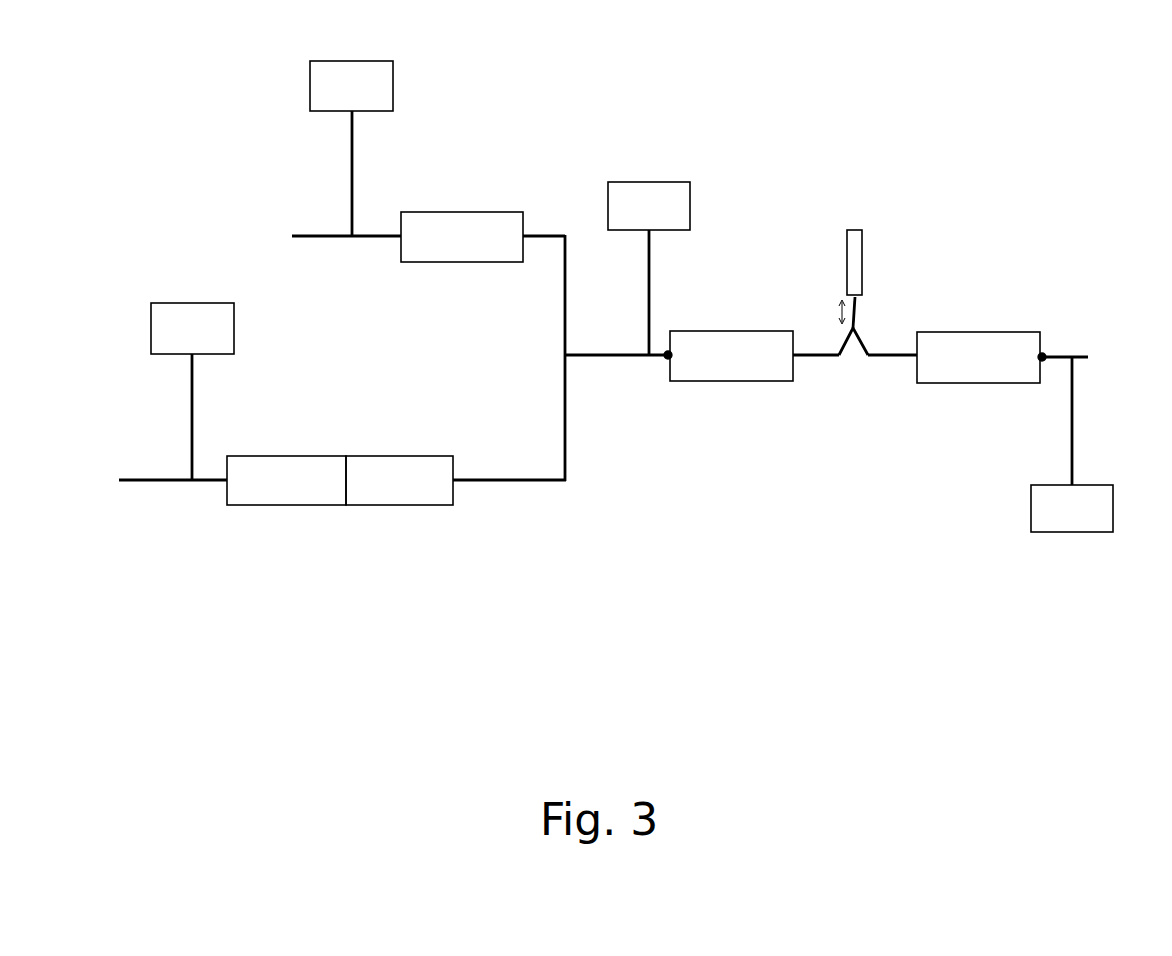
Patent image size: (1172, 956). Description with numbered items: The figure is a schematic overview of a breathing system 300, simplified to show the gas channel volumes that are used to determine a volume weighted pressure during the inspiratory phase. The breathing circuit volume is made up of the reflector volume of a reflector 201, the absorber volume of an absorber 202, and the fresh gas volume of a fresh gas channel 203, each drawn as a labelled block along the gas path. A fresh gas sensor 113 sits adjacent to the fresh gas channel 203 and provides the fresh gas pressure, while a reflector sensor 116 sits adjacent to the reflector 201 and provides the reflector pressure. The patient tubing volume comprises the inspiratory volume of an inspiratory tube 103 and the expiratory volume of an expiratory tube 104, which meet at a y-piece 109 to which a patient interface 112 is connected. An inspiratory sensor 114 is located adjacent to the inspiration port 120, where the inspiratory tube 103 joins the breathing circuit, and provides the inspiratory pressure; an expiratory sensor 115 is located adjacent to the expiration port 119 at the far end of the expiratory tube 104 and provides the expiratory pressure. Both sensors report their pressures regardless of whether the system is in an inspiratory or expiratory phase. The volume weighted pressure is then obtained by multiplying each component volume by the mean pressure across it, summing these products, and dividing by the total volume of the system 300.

The breathing system 300 is at (160, 240).
The fresh gas sensor 113 is at (386, 149).
The fresh gas channel 203 is at (462, 257).
The reflector sensor 116 is at (220, 392).
The reflector 201 is at (286, 502).
The absorber 202 is at (399, 502).
The inspiratory sensor 114 is at (682, 269).
The inspiratory tube 103 is at (731, 379).
The inspiration port 120 is at (665, 361).
The y-piece 109 is at (862, 342).
The patient interface 112 is at (857, 228).
The expiratory tube 104 is at (978, 379).
The expiration port 119 is at (1046, 352).
The expiratory sensor 115 is at (1043, 508).